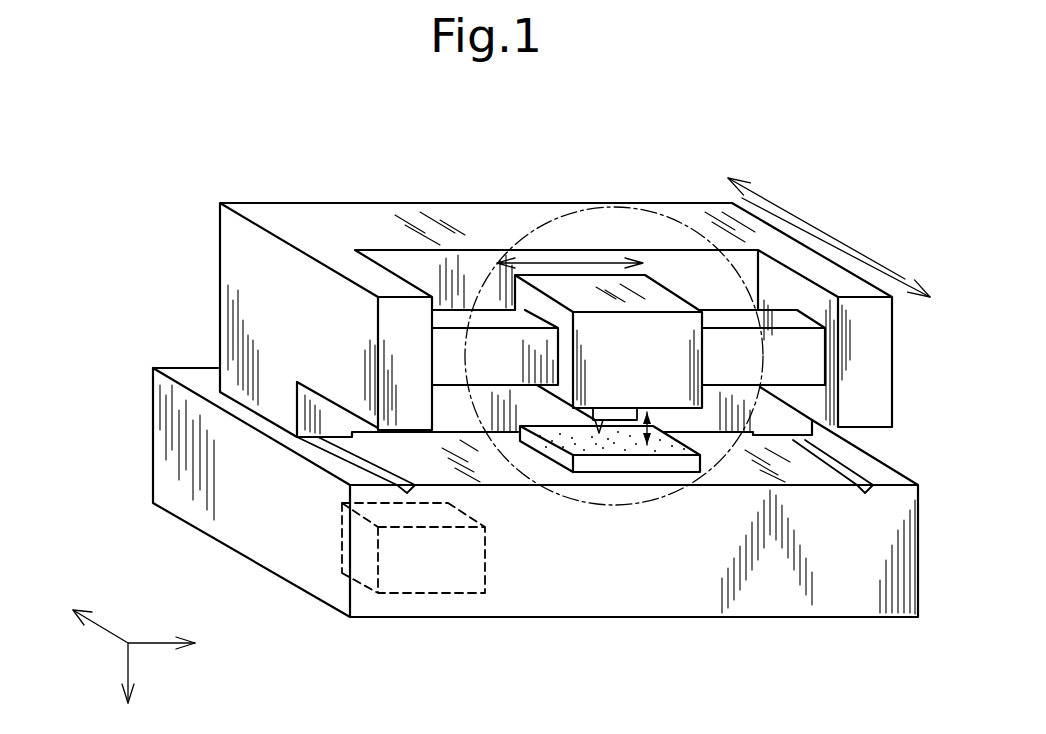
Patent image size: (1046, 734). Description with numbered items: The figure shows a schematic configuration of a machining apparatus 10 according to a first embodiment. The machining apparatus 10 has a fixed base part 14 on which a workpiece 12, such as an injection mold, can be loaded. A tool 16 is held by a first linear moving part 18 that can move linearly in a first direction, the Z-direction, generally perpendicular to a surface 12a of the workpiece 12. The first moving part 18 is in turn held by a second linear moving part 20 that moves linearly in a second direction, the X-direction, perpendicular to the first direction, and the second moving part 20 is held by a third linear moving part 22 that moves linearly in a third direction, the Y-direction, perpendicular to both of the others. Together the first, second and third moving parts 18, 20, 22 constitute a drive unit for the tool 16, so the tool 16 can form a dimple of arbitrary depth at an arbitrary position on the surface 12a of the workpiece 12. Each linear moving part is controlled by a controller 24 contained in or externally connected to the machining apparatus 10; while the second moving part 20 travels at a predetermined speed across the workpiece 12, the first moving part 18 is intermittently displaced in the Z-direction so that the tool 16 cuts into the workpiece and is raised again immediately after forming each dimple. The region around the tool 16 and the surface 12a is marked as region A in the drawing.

The machining apparatus 10 is at (186, 182).
The workpiece 12 is at (682, 462).
The surface of the workpiece 12a is at (550, 432).
The base part 14 is at (855, 598).
The tool 16 is at (603, 432).
The first linear moving part 18 is at (622, 412).
The second linear moving part 20 is at (663, 327).
The third linear moving part 22 is at (336, 295).
The controller 24 is at (403, 580).
The machining region A is at (528, 232).